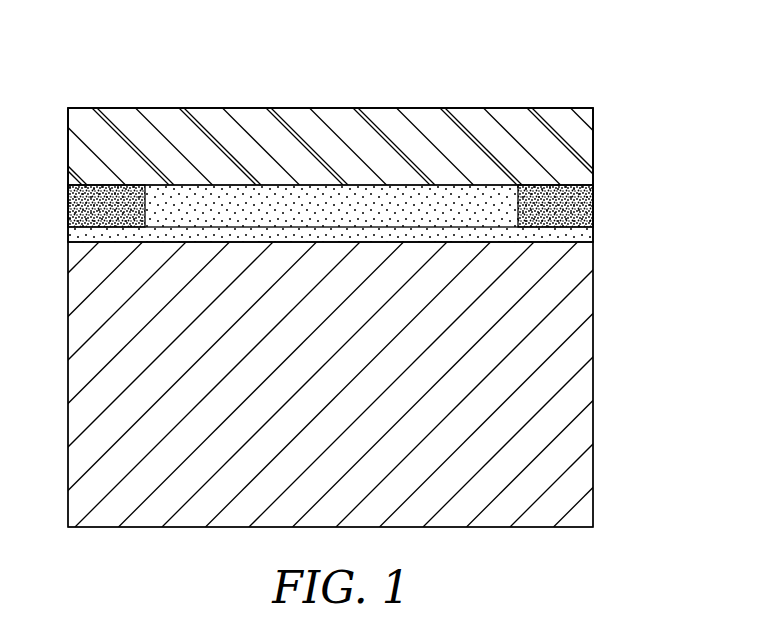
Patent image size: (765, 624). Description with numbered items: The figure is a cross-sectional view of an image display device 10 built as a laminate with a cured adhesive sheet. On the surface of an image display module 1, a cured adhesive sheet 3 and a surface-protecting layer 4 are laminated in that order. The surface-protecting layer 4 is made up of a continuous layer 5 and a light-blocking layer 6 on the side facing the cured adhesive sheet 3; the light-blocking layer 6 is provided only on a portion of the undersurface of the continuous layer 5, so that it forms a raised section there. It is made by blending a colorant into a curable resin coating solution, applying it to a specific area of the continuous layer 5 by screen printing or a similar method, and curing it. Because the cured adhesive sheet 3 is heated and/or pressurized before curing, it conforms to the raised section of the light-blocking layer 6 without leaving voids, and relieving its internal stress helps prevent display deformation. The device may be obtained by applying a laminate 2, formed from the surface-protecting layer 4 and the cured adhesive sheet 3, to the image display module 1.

The image display module 1 is at (610, 527).
The laminate 2 is at (610, 112).
The cured adhesive sheet 3 is at (391, 210).
The surface-protecting layer 4 is at (55, 113).
The continuous layer 5 is at (295, 128).
The light-blocking layer 6 is at (123, 203).
The image display device 10 is at (628, 44).